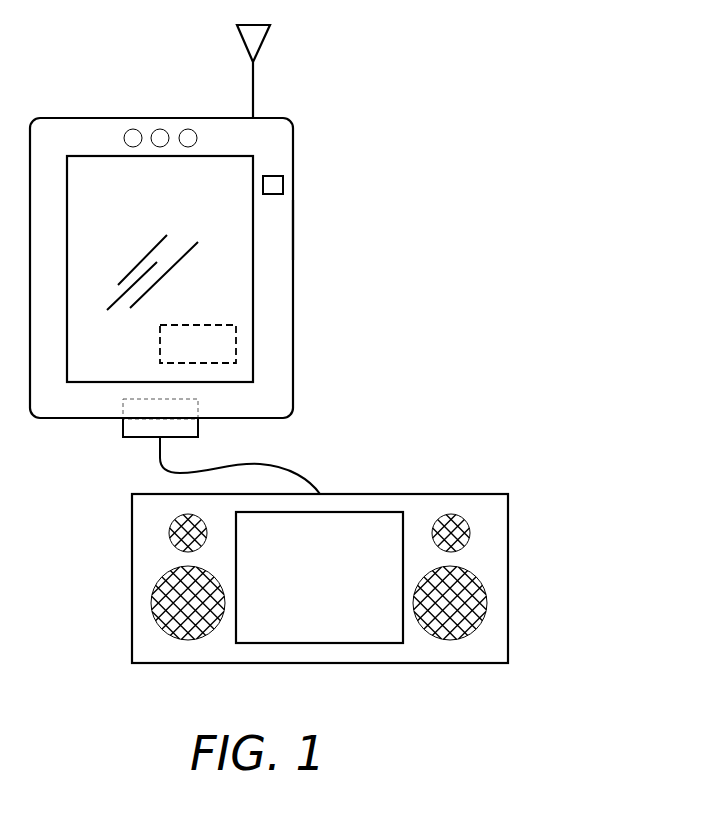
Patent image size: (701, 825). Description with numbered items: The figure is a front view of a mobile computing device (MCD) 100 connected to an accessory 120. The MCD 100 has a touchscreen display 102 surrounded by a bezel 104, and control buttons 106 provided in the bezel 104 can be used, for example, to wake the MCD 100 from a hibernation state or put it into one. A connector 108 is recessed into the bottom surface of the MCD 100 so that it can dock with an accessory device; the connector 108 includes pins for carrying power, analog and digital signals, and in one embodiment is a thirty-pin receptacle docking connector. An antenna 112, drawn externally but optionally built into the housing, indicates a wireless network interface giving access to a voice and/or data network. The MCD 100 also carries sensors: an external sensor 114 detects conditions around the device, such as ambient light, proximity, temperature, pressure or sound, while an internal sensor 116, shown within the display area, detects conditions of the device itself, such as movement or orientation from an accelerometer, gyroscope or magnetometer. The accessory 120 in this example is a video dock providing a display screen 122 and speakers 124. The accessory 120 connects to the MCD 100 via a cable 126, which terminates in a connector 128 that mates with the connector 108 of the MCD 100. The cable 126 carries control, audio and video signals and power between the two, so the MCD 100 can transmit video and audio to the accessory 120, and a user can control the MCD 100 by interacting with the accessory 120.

The mobile computing device 100 is at (293, 156).
The touchscreen display 102 is at (160, 269).
The bezel 104 is at (272, 231).
The control buttons 106 is at (185, 129).
The connector 108 is at (142, 399).
The antenna 112 is at (263, 43).
The external sensor 114 is at (283, 186).
The internal sensor 116 is at (207, 323).
The accessory 120 is at (367, 494).
The display screen 122 is at (319, 577).
The speakers 124 is at (150, 603).
The cable 126 is at (293, 465).
The connector 128 is at (137, 437).